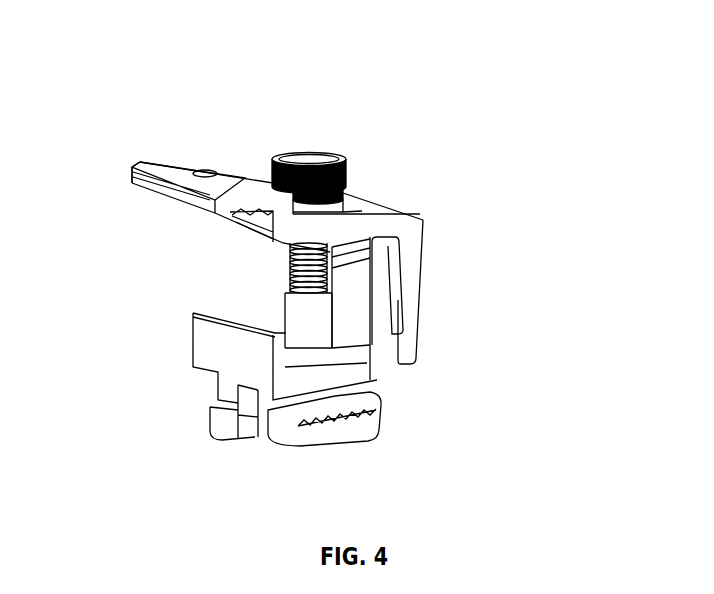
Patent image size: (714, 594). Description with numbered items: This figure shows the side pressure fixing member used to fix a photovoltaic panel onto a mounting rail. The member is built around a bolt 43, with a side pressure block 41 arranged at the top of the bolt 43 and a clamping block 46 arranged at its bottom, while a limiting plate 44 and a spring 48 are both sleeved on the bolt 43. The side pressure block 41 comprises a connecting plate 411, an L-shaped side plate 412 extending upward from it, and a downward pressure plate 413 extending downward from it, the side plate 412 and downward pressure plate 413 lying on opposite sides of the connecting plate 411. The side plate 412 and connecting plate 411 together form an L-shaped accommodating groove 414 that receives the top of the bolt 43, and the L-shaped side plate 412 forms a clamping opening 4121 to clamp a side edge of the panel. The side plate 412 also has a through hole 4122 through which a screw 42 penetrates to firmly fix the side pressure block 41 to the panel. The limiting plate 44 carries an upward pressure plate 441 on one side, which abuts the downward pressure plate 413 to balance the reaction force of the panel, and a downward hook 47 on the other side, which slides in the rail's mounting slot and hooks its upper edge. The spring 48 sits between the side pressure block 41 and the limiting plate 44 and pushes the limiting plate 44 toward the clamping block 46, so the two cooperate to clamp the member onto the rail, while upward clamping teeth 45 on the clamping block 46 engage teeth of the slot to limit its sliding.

The side pressure block 41 is at (143, 199).
The connecting plate 411 is at (380, 228).
The L-shaped side plate 412 is at (253, 178).
The clamping opening 4121 is at (222, 244).
The through hole 4122 is at (205, 173).
The downward pressure plate 413 is at (410, 253).
The L-shaped accommodating groove 414 is at (375, 203).
The screw 42 is at (140, 162).
The bolt 43 is at (335, 155).
The limiting plate 44 is at (357, 375).
The upward pressure plate 441 is at (375, 326).
The upward clamping teeth 45 is at (373, 433).
The clamping block 46 is at (373, 407).
The downward hook 47 is at (210, 418).
The spring 48 is at (297, 267).